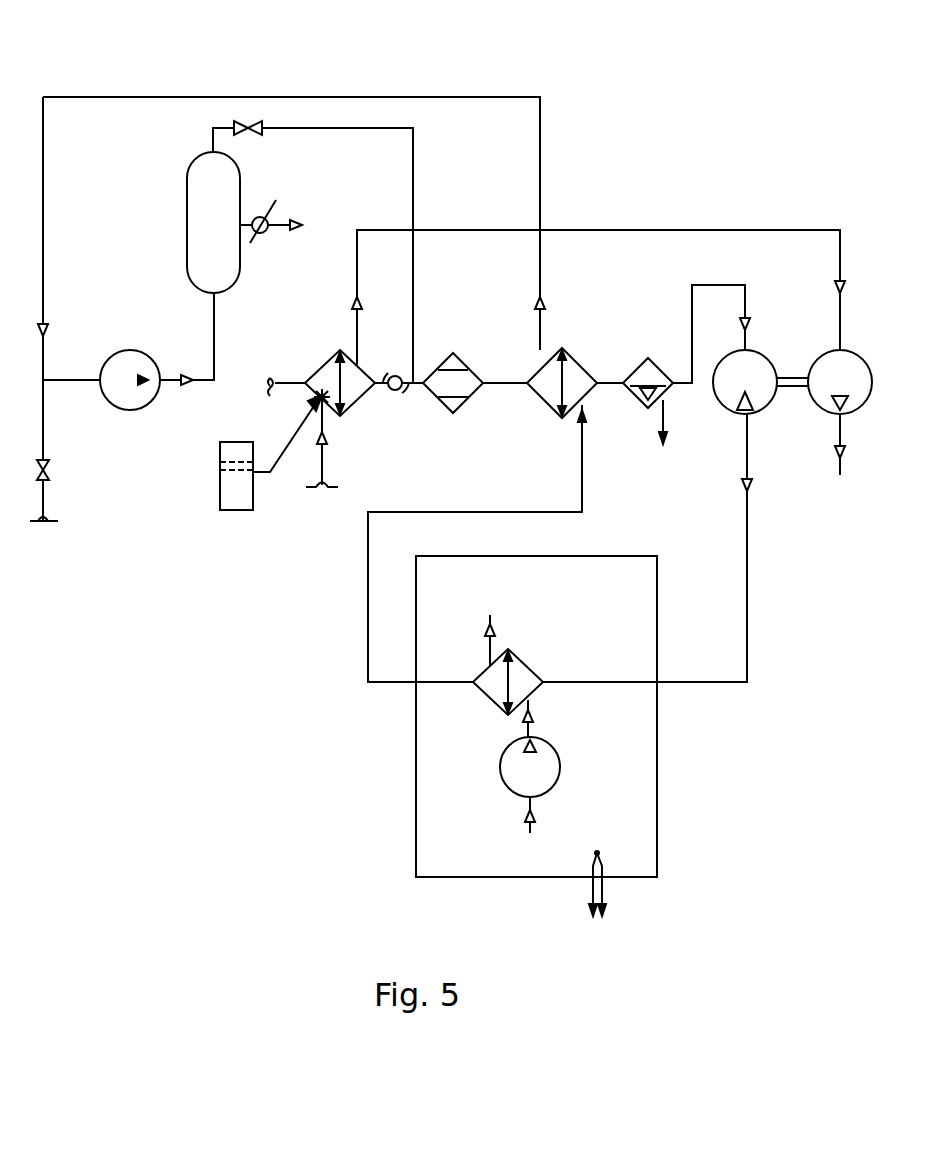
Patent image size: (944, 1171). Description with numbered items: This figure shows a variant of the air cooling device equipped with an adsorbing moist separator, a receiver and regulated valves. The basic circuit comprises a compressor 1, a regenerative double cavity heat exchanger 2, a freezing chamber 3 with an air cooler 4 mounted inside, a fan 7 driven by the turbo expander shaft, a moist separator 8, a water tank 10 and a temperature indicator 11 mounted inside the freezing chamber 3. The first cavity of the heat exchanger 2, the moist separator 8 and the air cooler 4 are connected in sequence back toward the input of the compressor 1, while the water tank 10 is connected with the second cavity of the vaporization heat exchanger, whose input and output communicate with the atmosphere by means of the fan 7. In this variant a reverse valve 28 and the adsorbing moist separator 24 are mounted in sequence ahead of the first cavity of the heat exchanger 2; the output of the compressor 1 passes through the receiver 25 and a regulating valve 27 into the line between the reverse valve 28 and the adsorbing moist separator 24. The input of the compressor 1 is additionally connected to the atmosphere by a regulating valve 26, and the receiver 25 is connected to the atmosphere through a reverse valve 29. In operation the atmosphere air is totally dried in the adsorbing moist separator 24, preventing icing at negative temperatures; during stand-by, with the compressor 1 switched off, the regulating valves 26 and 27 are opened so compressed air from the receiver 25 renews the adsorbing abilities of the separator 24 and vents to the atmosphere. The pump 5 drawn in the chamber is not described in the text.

The compressor 1 is at (138, 360).
The regenerative double cavity heat exchanger 2 is at (575, 365).
The freezing chamber 3 is at (422, 750).
The air cooler 4 is at (522, 676).
The pump 5 is at (548, 760).
The fan 7 is at (828, 368).
The moist separator 8 is at (652, 362).
The water tank 10 is at (222, 486).
The temperature indicator 11 is at (604, 893).
The adsorbing moist separator 24 is at (466, 372).
The receiver 25 is at (196, 184).
The regulating valve 26 is at (48, 462).
The regulating valve 27 is at (248, 120).
The reverse valve 28 is at (402, 395).
The reverse valve 29 is at (276, 204).